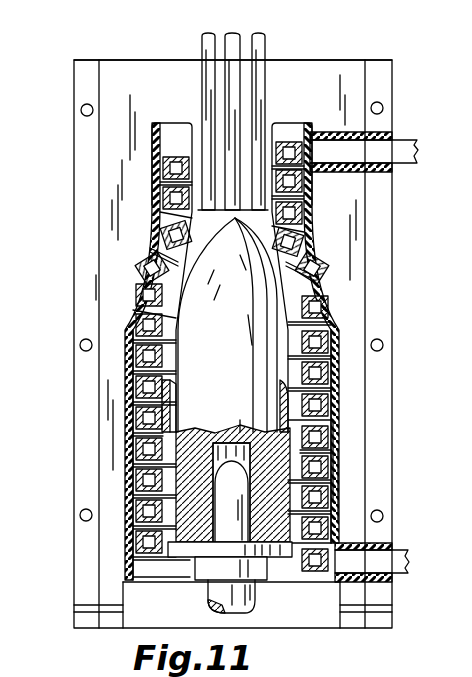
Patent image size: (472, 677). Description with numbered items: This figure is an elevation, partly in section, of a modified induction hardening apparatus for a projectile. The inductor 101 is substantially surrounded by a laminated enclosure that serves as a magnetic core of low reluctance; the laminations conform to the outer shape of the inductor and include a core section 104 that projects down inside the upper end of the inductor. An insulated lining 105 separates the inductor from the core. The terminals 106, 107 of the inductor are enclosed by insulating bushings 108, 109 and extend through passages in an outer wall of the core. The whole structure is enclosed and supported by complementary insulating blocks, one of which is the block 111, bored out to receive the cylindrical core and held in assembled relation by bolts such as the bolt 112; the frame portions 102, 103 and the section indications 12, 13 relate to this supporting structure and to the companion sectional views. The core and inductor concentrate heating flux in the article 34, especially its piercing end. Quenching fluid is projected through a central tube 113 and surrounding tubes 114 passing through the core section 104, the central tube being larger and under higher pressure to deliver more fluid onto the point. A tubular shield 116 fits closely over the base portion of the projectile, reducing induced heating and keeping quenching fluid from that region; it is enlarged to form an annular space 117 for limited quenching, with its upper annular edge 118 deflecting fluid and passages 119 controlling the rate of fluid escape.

The article 34 is at (228, 340).
The inductor 101 is at (338, 336).
The mold frame 102 is at (357, 388).
The top frame plate 103 is at (290, 66).
The core section 104 is at (245, 206).
The insulated lining 105 is at (330, 284).
The terminal 106 is at (393, 146).
The terminal 107 is at (390, 568).
The insulating bushing 108 is at (380, 133).
The insulating bushing 109 is at (375, 548).
The insulating block 111 is at (78, 384).
The bolt 112 is at (80, 343).
The central tube 113 is at (212, 22).
The surrounding tube 114 is at (262, 36).
The tubular shield 116 is at (170, 548).
The annular space 117 is at (172, 412).
The upper annular edge 118 is at (172, 388).
The passage 119 is at (284, 432).
The section line 12- 12 is at (422, 165).
The section line 13- 13 is at (415, 433).